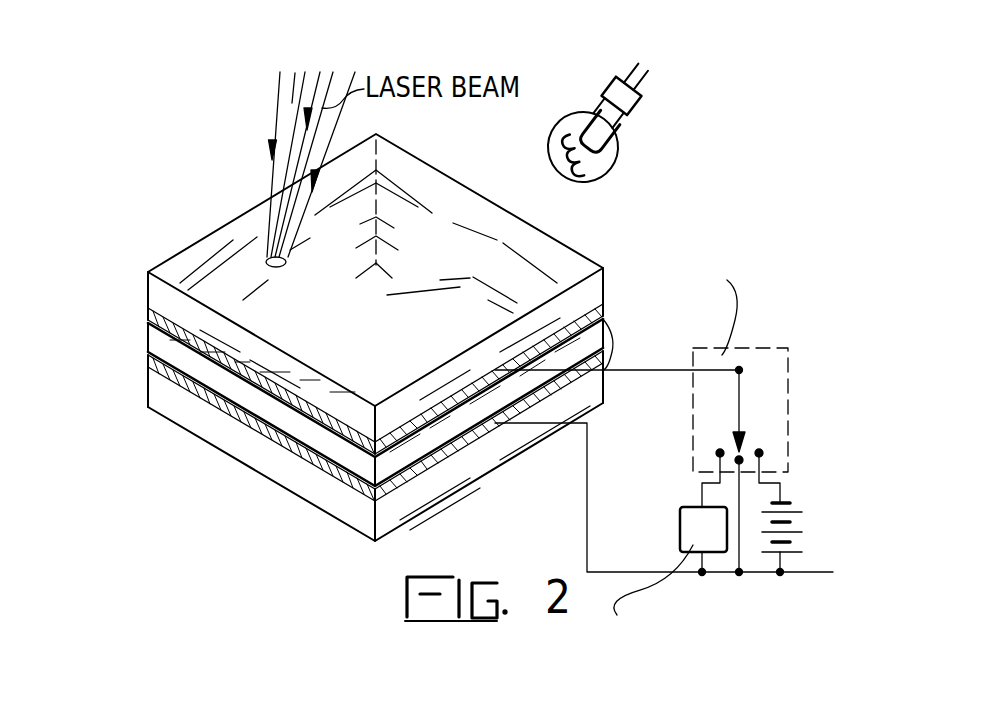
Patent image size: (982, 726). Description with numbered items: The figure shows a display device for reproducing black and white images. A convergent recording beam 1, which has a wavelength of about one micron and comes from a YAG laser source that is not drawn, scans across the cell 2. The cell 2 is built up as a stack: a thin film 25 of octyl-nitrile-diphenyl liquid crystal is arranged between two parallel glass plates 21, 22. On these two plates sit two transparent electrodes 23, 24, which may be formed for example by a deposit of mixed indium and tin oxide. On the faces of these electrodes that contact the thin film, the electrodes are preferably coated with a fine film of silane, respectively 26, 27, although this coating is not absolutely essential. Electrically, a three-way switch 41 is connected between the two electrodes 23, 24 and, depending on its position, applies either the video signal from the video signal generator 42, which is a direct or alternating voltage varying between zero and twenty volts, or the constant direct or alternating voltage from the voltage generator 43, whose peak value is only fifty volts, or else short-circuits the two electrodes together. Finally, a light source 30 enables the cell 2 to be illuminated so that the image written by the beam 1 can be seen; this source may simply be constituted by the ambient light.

The convergent recording beam 1 is at (287, 113).
The cell 2 is at (226, 237).
The glass plate 21 is at (160, 290).
The glass plate 22 is at (160, 400).
The transparent electrode 23 is at (152, 312).
The transparent electrode 24 is at (143, 375).
The thin film 25 is at (148, 345).
The silane film 26 is at (145, 322).
The silane film 27 is at (145, 355).
The light source 30 is at (606, 152).
The three-way switch 41 is at (772, 352).
The video signal generator 42 is at (680, 517).
The voltage generator 43 is at (790, 542).